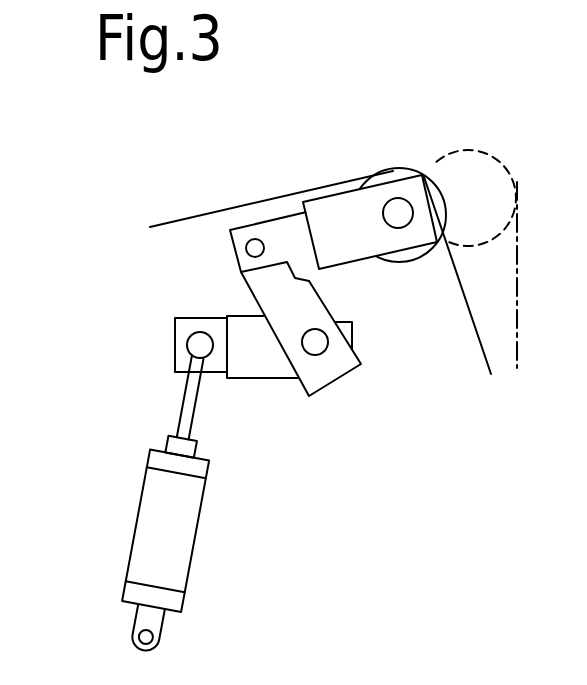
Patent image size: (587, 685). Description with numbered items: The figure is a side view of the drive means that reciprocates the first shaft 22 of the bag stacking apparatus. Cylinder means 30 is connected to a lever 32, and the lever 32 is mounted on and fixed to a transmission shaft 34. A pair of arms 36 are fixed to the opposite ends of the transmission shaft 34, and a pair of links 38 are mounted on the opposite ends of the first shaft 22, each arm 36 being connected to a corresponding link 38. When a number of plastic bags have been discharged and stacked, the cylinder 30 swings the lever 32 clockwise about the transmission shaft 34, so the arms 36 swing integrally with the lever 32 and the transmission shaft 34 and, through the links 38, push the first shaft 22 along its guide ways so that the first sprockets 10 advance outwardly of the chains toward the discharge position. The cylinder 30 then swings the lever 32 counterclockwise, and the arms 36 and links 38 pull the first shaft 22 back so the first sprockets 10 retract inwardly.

The first sprockets 10 is at (392, 171).
The first shaft 22 is at (398, 213).
The cylinder means 30 is at (152, 534).
The lever 32 is at (257, 362).
The transmission shaft 34 is at (315, 342).
The arms 36 is at (270, 297).
The links 38 is at (327, 215).